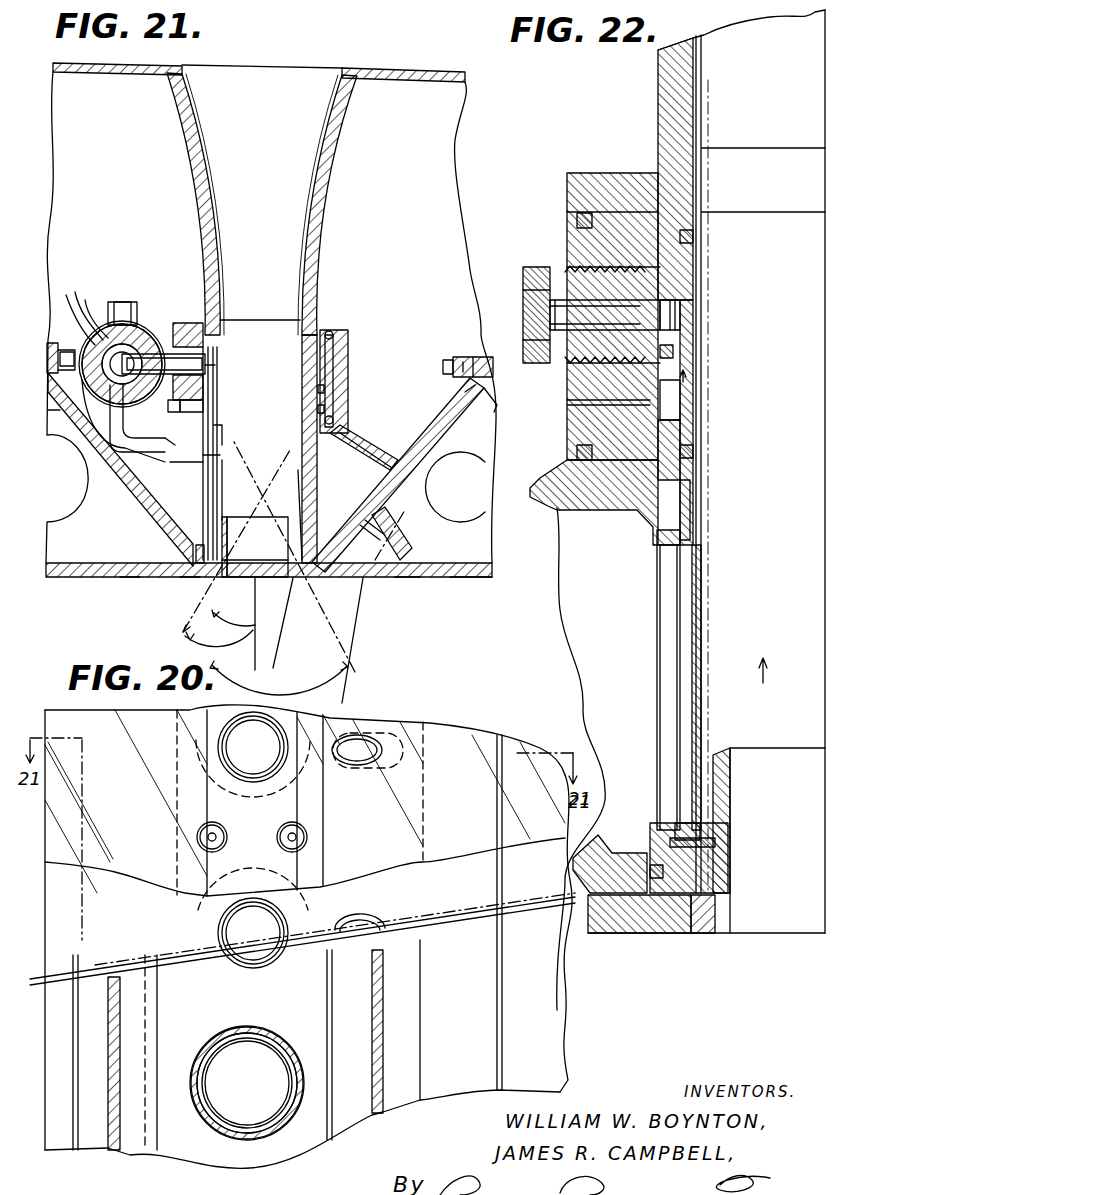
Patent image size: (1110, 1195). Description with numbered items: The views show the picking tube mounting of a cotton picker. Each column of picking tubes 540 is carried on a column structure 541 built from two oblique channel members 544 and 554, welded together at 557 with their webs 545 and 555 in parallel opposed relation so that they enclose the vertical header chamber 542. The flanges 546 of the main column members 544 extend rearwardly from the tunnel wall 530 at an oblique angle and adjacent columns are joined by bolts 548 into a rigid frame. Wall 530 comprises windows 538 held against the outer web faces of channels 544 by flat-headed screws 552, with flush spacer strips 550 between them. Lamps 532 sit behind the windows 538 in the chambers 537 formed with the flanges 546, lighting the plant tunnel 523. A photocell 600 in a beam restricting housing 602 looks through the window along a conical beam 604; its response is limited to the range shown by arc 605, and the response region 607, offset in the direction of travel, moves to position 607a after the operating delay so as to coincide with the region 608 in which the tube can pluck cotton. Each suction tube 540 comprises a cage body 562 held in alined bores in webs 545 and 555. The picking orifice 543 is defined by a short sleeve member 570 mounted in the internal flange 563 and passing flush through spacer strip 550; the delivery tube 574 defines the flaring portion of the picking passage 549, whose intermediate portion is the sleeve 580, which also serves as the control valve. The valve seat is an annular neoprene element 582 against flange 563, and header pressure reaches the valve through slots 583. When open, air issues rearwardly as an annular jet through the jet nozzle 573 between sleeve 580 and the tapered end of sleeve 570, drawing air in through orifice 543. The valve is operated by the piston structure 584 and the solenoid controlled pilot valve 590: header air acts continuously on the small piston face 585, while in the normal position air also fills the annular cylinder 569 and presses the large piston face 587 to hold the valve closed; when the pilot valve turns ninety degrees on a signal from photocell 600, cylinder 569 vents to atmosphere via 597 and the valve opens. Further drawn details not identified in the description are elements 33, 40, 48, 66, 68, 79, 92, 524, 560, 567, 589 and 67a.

In FIG. 21, the pin 33 is at (388, 497).
In FIG. 21, the pivot axis 40 is at (236, 541).
In FIG. 20, the pivot axis 40 is at (265, 898).
In FIG. 21, the bearing 48 is at (198, 535).
In FIG. 21, the seal 66 is at (171, 450).
In FIG. 22, the seal 66 is at (600, 495).
In FIG. 22, the bolt 68 is at (660, 370).
In FIG. 21, the passage 79 is at (165, 405).
In FIG. 22, the passage 79 is at (567, 402).
In FIG. 21, the conduits 92 is at (82, 335).
In FIG. 21, the plant tunnel 523 is at (400, 615).
In FIG. 22, the inner wall 524 is at (716, 92).
In FIG. 21, the tunnel wall 530 is at (463, 595).
In FIG. 20, the tunnel wall 530 is at (57, 822).
In FIG. 21, the lamps 532 is at (72, 485).
In FIG. 20, the lamps 532 is at (470, 1008).
In FIG. 21, the chambers 537 is at (269, 556).
In FIG. 21, the windows 538 is at (135, 590).
In FIG. 20, the windows 538 is at (150, 808).
In FIG. 22, the windows 538 is at (643, 935).
In FIG. 21, the picking tube 540 is at (272, 279).
In FIG. 20, the picking tube 540 is at (257, 712).
In FIG. 21, the column structure 541 is at (157, 518).
In FIG. 20, the column structure 541 is at (95, 1125).
In FIG. 22, the column structure 541 is at (585, 896).
In FIG. 21, the header chamber 542 is at (205, 473).
In FIG. 20, the header chamber 542 is at (195, 1138).
In FIG. 22, the header chamber 542 is at (640, 702).
In FIG. 21, the picking orifice 543 is at (272, 621).
In FIG. 20, the picking orifice 543 is at (262, 756).
In FIG. 22, the picking orifice 543 is at (800, 961).
In FIG. 21, the main column member 544 is at (439, 448).
In FIG. 21, the web 545 is at (188, 580).
In FIG. 20, the web 545 is at (182, 965).
In FIG. 21, the flanges 546 is at (72, 452).
In FIG. 22, the flanges 546 is at (605, 842).
In FIG. 21, the bolts 548 is at (446, 365).
In FIG. 20, the picking passage 549 is at (262, 1094).
In FIG. 22, the picking passage 549 is at (808, 134).
In FIG. 21, the spacer strips 550 is at (285, 605).
In FIG. 20, the spacer strips 550 is at (262, 843).
In FIG. 22, the spacer strips 550 is at (710, 935).
In FIG. 20, the flat-headed screws 552 is at (310, 838).
In FIG. 21, the column member 554 is at (361, 442).
In FIG. 20, the column member 554 is at (368, 1070).
In FIG. 22, the column member 554 is at (533, 481).
In FIG. 21, the web 555 is at (218, 458).
In FIG. 21, the weld 557 is at (396, 455).
In FIG. 21, the top plate 560 is at (300, 61).
In FIG. 21, the cage body 562 is at (196, 483).
In FIG. 20, the cage body 562 is at (288, 1032).
In FIG. 22, the cage body 562 is at (650, 538).
In FIG. 21, the internal flange 563 is at (232, 555).
In FIG. 22, the nut 567 is at (690, 330).
In FIG. 21, the annular cylinder 569 is at (215, 375).
In FIG. 22, the annular cylinder 569 is at (686, 304).
In FIG. 21, the short sleeve member 570 is at (257, 512).
In FIG. 22, the short sleeve member 570 is at (785, 752).
In FIG. 21, the jet nozzle 573 is at (215, 508).
In FIG. 22, the jet nozzle 573 is at (718, 754).
In FIG. 21, the delivery tube 574 is at (213, 215).
In FIG. 21, the sleeve valve 580 is at (299, 503).
In FIG. 20, the sleeve valve 580 is at (208, 1040).
In FIG. 22, the sleeve valve 580 is at (706, 400).
In FIG. 21, the valve seat 582 is at (232, 527).
In FIG. 22, the valve seat 582 is at (715, 842).
In FIG. 21, the slots 583 is at (205, 520).
In FIG. 20, the slots 583 is at (262, 1135).
In FIG. 22, the slots 583 is at (665, 616).
In FIG. 21, the piston structure 584 is at (340, 399).
In FIG. 22, the piston structure 584 is at (700, 353).
In FIG. 21, the small piston face 585 is at (218, 440).
In FIG. 22, the small piston face 585 is at (698, 490).
In FIG. 21, the large piston face 587 is at (216, 387).
In FIG. 21, the flange 589 is at (215, 325).
In FIG. 21, the pilot valve 590 is at (112, 305).
In FIG. 21, the atmospheric connection 597 is at (140, 304).
In FIG. 21, the photocell 600 is at (405, 530).
In FIG. 21, the beam restricting housing 602 is at (402, 578).
In FIG. 20, the beam restricting housing 602 is at (372, 770).
In FIG. 21, the conical beam 604 is at (358, 640).
In FIG. 21, the response range arc 605 is at (348, 675).
In FIG. 21, the response region 607 is at (317, 665).
In FIG. 21, the delayed response region position 607a is at (220, 628).
In FIG. 21, the picking region 608 is at (183, 610).
In FIG. 21, the bolt 67a is at (330, 330).